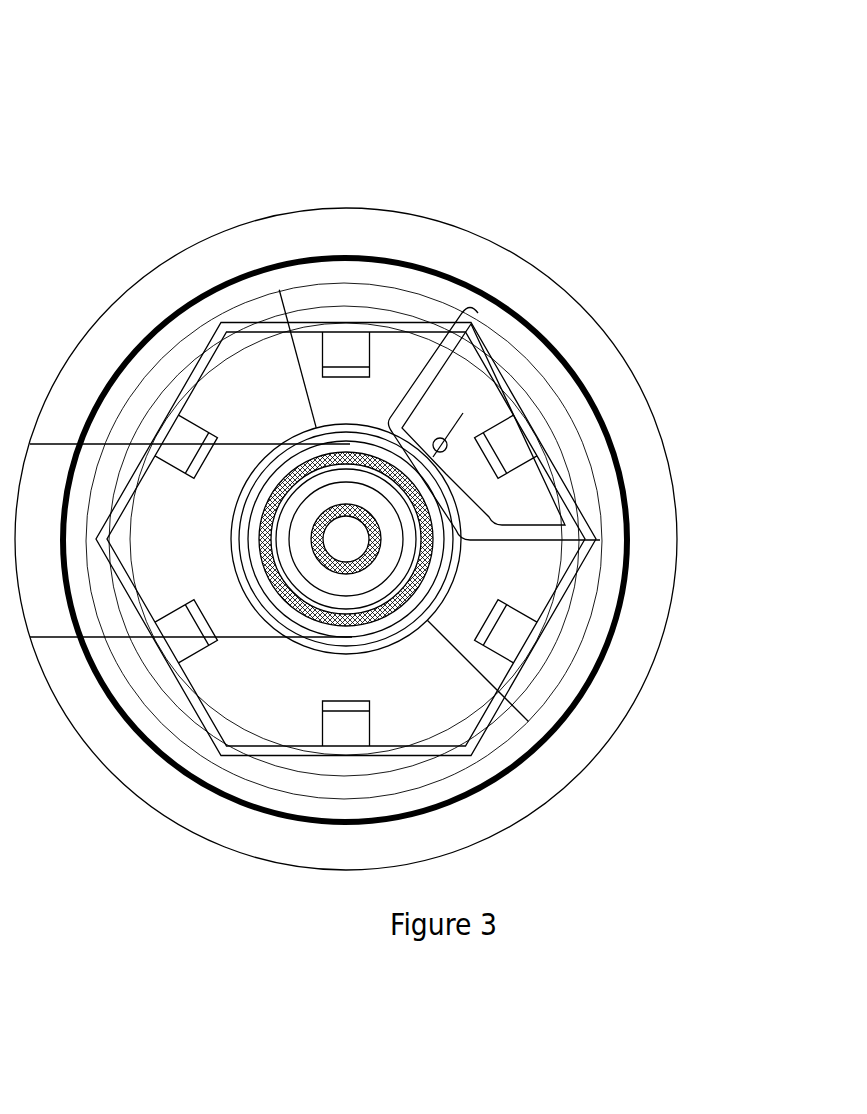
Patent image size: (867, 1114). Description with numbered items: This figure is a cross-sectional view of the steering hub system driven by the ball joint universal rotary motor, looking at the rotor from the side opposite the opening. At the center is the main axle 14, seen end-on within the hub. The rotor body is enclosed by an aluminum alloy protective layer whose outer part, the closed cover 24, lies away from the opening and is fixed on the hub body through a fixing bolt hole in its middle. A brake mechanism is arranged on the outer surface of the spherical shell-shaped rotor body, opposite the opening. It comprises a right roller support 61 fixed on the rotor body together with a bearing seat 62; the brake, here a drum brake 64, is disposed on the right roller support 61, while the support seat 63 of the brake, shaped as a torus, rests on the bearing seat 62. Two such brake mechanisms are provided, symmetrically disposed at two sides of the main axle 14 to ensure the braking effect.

The closed cover 24 is at (258, 330).
The right roller support 61 is at (358, 343).
The support seat 63 is at (390, 313).
The drum brake 64 is at (515, 360).
The bearing seat 62 is at (448, 448).
The main axle 14 is at (695, 613).